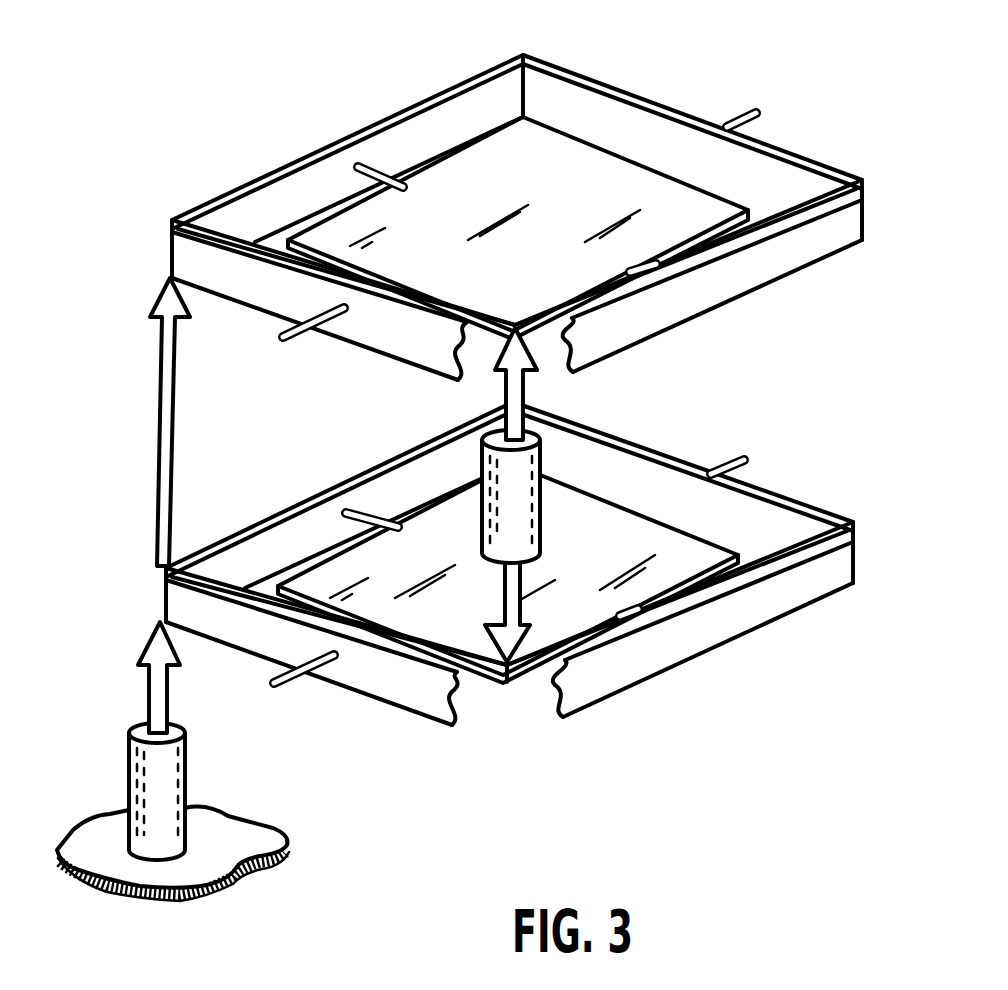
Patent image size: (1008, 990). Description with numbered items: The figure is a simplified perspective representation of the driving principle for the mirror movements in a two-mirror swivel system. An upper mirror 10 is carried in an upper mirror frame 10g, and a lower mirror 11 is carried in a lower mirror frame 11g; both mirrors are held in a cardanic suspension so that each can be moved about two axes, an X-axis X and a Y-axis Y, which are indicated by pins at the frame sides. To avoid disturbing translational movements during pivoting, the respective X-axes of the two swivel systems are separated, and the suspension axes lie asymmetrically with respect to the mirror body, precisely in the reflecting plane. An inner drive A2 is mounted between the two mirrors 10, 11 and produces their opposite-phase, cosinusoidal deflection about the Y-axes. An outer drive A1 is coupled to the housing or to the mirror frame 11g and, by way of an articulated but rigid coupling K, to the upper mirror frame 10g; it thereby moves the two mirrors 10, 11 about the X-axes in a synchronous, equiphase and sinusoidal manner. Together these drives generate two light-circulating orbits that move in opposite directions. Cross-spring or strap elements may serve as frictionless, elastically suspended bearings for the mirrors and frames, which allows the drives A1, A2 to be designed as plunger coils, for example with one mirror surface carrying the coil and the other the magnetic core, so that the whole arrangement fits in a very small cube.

The upper mirror 10 is at (560, 163).
The upper mirror frame 10g is at (786, 248).
The lower mirror 11 is at (573, 618).
The mirror frame 11g is at (750, 608).
The outer drive A1 is at (165, 787).
The inner drive A2 is at (523, 513).
The articulated but rigid coupling K is at (158, 424).
The X-axis X is at (515, 400).
The Y-axis Y is at (504, 405).